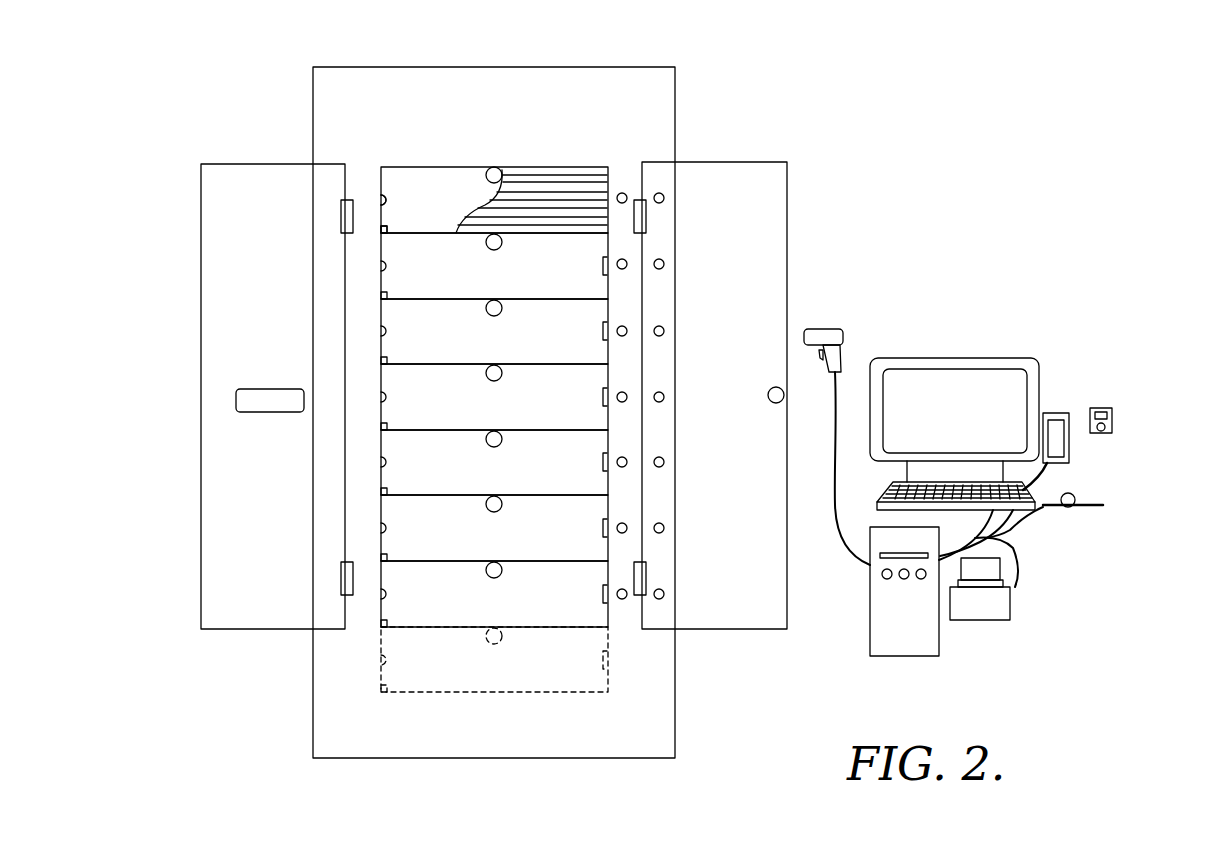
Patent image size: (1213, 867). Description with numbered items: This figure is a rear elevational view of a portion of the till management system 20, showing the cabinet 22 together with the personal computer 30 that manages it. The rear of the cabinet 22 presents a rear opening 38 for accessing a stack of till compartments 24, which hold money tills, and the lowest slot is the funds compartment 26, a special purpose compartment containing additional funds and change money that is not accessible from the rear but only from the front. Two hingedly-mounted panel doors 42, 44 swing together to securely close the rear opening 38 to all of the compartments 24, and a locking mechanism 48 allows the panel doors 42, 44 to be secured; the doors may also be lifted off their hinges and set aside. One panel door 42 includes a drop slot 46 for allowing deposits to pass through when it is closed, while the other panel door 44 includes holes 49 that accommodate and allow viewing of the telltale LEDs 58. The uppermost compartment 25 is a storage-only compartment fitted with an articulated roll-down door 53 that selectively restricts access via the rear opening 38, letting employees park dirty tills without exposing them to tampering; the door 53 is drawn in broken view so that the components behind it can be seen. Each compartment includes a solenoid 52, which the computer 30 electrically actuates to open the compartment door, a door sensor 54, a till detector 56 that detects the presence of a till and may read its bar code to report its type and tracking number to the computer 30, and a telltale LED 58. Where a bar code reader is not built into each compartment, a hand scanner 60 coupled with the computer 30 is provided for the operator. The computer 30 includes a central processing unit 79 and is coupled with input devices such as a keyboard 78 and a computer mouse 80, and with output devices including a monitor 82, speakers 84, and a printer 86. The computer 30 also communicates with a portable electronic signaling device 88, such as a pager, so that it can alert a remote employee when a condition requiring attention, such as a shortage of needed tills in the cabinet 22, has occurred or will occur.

The system 20 is at (225, 86).
The cabinet 22 is at (508, 55).
The till compartments 24 is at (492, 267).
The storage-only compartment 25 is at (467, 199).
The funds compartment 26 is at (492, 659).
The personal computer 30 is at (1082, 310).
The rear opening 38 is at (538, 716).
The panel door 42 is at (298, 226).
The panel door 44 is at (773, 231).
The drop slot 46 is at (240, 398).
The locking mechanism 48 is at (769, 404).
The holes 49 is at (664, 197).
The solenoid 52 is at (496, 166).
The articulated roll-down door 53 is at (563, 183).
The door sensor 54 is at (380, 233).
The till detector 56 is at (380, 196).
The telltale LED 58 is at (623, 192).
The hand scanner 60 is at (832, 334).
The keyboard 78 is at (1030, 490).
The central processing unit 79 is at (925, 645).
The computer mouse 80 is at (1072, 507).
The monitor 82 is at (965, 375).
The speakers 84 is at (1058, 420).
The printer 86 is at (1000, 607).
The portable electronic signaling device 88 is at (1112, 428).